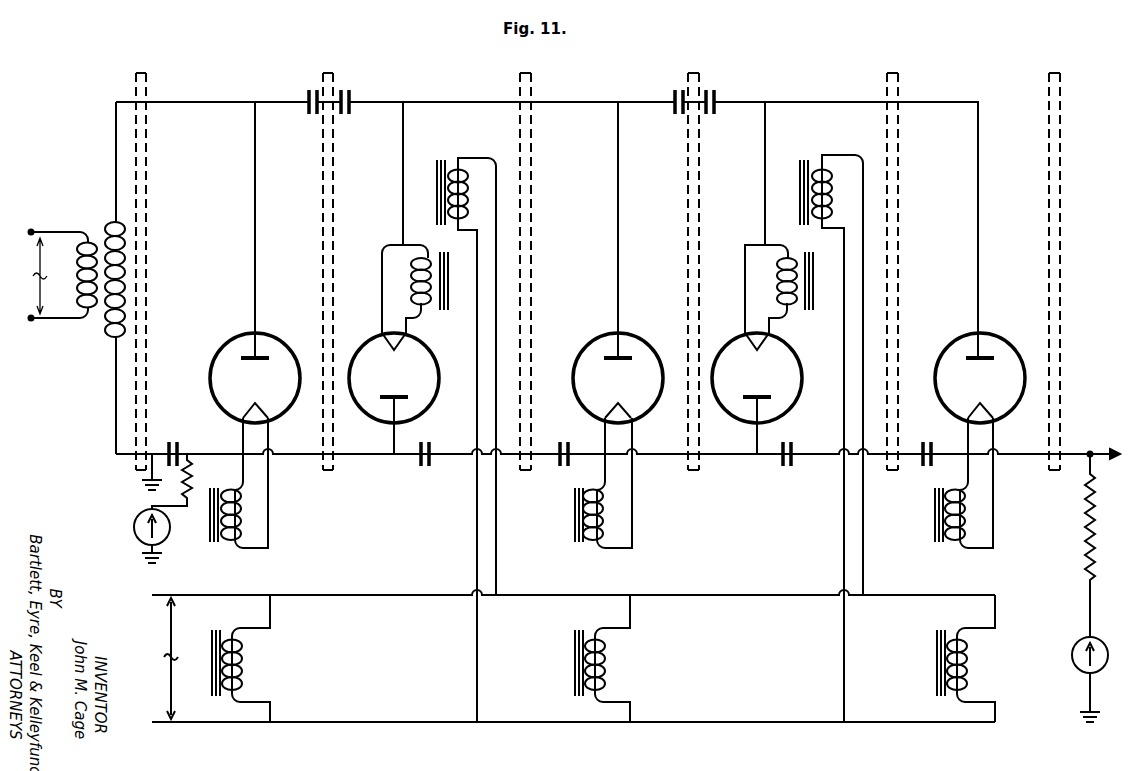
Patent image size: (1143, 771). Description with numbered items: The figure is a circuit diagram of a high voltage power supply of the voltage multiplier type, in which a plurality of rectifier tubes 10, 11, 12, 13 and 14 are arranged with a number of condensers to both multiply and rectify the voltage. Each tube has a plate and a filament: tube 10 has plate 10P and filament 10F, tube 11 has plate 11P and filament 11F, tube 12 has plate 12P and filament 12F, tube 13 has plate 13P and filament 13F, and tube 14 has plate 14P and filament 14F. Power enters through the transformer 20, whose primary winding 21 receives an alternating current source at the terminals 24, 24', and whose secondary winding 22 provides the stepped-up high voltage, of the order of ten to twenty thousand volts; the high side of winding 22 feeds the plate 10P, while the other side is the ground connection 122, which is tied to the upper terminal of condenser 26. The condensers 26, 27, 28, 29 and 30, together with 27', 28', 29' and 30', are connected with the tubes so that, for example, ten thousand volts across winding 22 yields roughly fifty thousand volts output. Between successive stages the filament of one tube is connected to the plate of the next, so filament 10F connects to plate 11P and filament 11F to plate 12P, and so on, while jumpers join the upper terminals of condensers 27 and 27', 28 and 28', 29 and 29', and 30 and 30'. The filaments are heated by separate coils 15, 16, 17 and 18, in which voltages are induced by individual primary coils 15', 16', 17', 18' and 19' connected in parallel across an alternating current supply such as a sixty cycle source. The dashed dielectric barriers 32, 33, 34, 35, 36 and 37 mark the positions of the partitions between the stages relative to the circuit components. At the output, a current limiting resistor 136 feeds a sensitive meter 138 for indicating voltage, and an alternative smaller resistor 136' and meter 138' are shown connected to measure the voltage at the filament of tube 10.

The rectifier tube 10 is at (264, 337).
The plate of tube 10 10P is at (250, 362).
The filament of tube 10 10F is at (258, 410).
The rectifier tube 11 is at (426, 350).
The plate of tube 11 11P is at (396, 394).
The filament of tube 11 11F is at (384, 348).
The rectifier tube 12 is at (632, 340).
The plate of tube 12 12P is at (626, 362).
The filament of tube 12 12F is at (622, 410).
The rectifier tube 13 is at (795, 360).
The plate of tube 13 13P is at (760, 394).
The filament of tube 13 13F is at (748, 348).
The rectifier tube 14 is at (1002, 352).
The plate of tube 14 14P is at (974, 362).
The filament of tube 14 14F is at (983, 408).
The filament heating coil 15 is at (228, 494).
The primary coil 15' is at (245, 658).
The filament heating coil 16 is at (415, 217).
The primary coil 16' is at (466, 440).
The filament heating coil 17 is at (603, 483).
The primary coil 17' is at (609, 658).
The filament heating coil 18 is at (779, 217).
The primary coil 18' is at (831, 438).
The primary coil 19' is at (971, 658).
The transformer 20 is at (100, 324).
The primary winding 21 is at (77, 282).
The secondary winding 22 is at (126, 290).
The terminal 24 is at (42, 216).
The terminal 24' is at (29, 334).
The condenser 26 is at (175, 440).
The condenser 27 is at (303, 85).
The condenser 27' is at (359, 86).
The condenser 28 is at (407, 469).
The condenser 28' is at (550, 471).
The condenser 29 is at (667, 88).
The condenser 29' is at (728, 89).
The condenser 30 is at (776, 470).
The condenser 30' is at (914, 469).
The dielectric barrier 32 is at (147, 160).
The dielectric barrier 33 is at (335, 170).
The dielectric barrier 34 is at (533, 180).
The dielectric barrier 35 is at (701, 163).
The dielectric barrier 36 is at (900, 174).
The dielectric barrier 37 is at (1062, 172).
The ground connection 122 is at (142, 478).
The resistor 136 is at (1111, 545).
The resistor 136' is at (192, 481).
The meter 138 is at (1103, 664).
The meter 138' is at (132, 536).